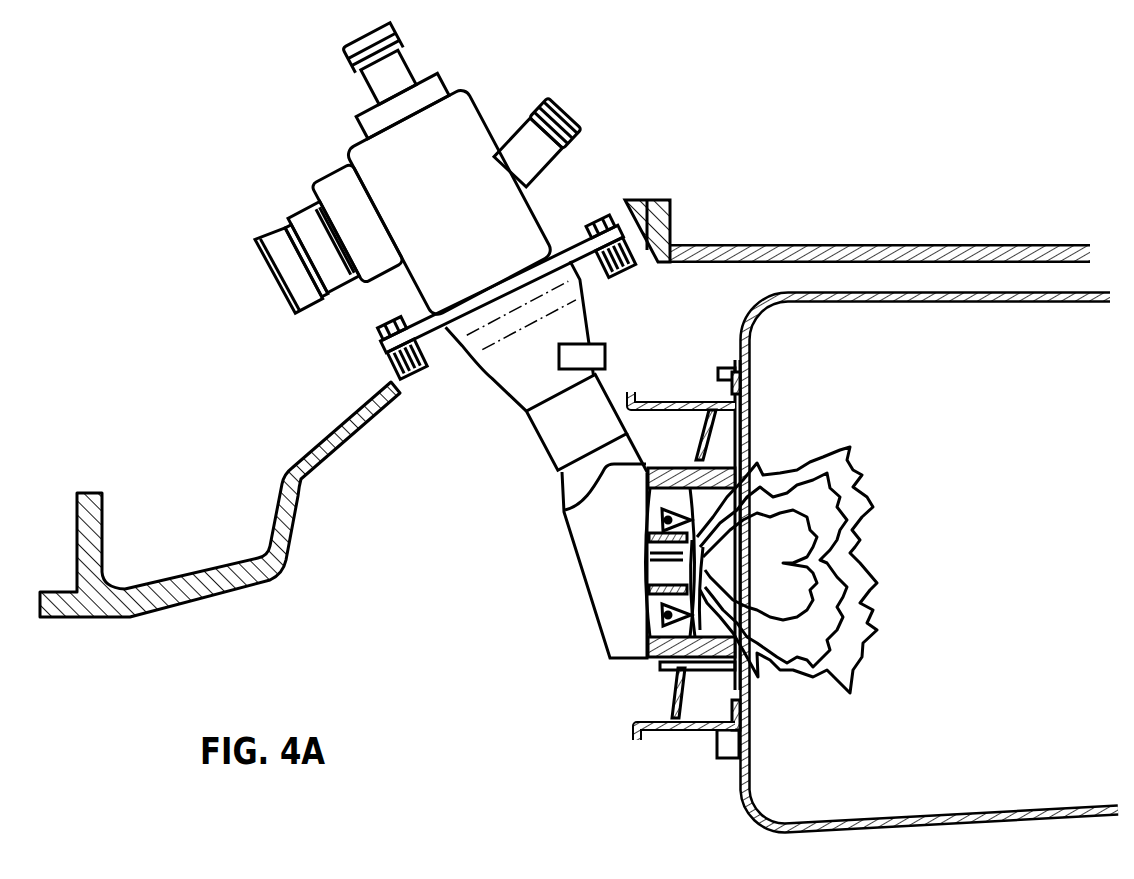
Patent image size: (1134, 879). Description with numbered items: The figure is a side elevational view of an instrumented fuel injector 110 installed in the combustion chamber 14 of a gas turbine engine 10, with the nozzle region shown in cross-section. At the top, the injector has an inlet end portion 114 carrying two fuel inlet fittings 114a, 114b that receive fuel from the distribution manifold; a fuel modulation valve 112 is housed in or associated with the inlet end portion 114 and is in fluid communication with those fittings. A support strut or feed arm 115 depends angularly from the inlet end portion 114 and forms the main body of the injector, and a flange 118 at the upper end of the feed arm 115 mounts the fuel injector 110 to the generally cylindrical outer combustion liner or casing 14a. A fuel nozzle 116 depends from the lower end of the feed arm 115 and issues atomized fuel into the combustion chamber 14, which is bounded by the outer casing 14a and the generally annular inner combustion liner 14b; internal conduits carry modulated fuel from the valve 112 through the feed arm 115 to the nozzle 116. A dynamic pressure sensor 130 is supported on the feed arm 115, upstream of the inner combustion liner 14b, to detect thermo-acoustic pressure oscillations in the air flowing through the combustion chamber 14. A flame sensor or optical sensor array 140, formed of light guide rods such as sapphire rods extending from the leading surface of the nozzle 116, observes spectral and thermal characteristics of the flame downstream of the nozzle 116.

The gas turbine engine 10 is at (871, 478).
The combustion chamber 14 is at (294, 463).
The outer combustion liner or casing 14a is at (774, 246).
The inner combustion liner 14b is at (1000, 292).
The instrumented fuel injector 110 is at (436, 336).
The fuel modulation valve 112 is at (322, 192).
The inlet end portion 114 is at (463, 135).
The fuel inlet fitting 114a is at (392, 44).
The fuel inlet fitting 114b is at (581, 132).
The support strut or feed arm 115 is at (555, 440).
The fuel nozzle 116 is at (660, 722).
The flange 118 is at (440, 332).
The dynamic pressure sensor 130 is at (605, 356).
The flame sensor or optical sensor array 140 is at (660, 432).